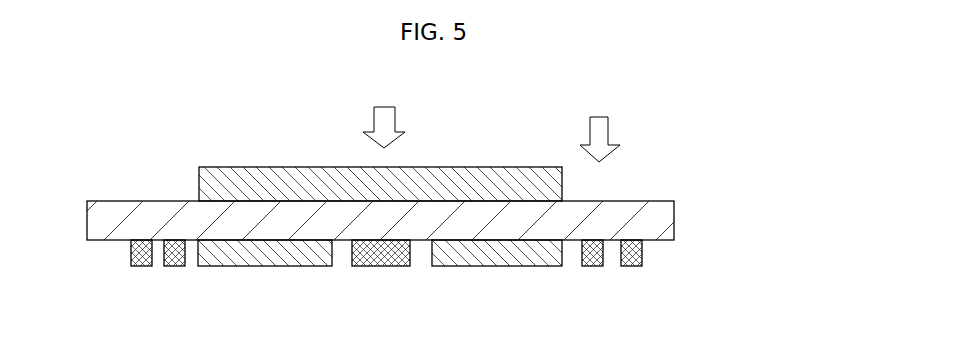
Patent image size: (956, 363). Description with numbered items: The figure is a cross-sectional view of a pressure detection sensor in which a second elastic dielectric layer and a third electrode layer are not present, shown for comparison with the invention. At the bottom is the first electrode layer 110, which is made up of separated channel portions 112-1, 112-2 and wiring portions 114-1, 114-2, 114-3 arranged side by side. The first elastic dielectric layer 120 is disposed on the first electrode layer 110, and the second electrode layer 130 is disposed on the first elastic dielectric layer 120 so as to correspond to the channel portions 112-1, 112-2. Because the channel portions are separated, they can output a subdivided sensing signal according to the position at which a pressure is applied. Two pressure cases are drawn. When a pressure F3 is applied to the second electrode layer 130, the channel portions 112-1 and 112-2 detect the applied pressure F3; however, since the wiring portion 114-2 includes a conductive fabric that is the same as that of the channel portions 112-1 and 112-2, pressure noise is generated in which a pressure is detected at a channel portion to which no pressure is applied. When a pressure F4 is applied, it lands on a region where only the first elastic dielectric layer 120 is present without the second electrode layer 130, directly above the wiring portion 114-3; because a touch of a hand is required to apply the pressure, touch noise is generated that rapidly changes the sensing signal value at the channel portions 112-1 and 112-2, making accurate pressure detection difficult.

The first electrode layer 110 is at (439, 277).
The first elastic dielectric layer 120 is at (690, 216).
The second electrode layer 130 is at (642, 172).
The channel portion 112-1 is at (253, 266).
The channel portion 112-2 is at (493, 266).
The wiring portion 114-1 is at (143, 266).
The wiring portion 114-2 is at (387, 266).
The wiring portion 114-3 is at (590, 266).
The pressure F3 is at (384, 114).
The pressure F4 is at (600, 128).